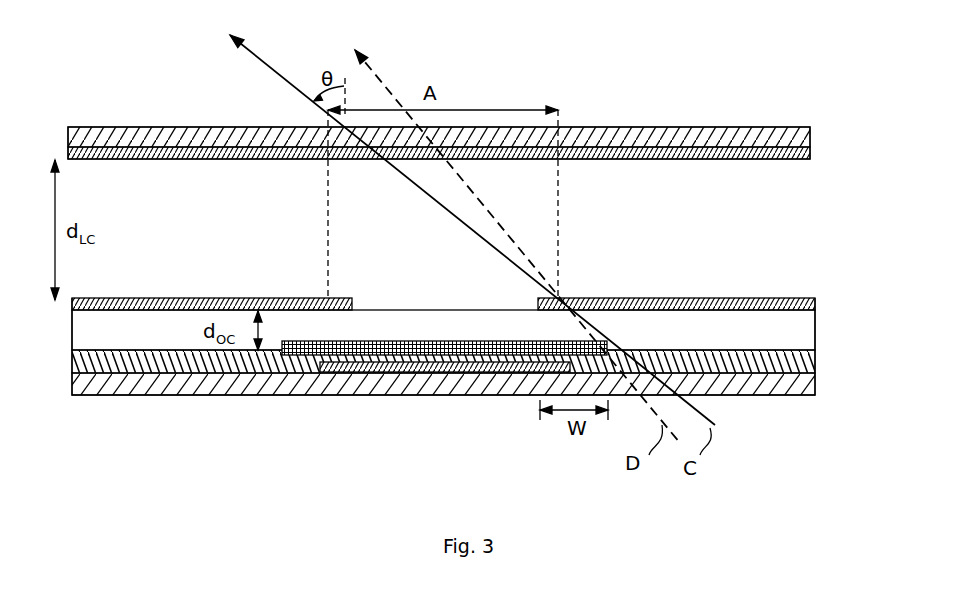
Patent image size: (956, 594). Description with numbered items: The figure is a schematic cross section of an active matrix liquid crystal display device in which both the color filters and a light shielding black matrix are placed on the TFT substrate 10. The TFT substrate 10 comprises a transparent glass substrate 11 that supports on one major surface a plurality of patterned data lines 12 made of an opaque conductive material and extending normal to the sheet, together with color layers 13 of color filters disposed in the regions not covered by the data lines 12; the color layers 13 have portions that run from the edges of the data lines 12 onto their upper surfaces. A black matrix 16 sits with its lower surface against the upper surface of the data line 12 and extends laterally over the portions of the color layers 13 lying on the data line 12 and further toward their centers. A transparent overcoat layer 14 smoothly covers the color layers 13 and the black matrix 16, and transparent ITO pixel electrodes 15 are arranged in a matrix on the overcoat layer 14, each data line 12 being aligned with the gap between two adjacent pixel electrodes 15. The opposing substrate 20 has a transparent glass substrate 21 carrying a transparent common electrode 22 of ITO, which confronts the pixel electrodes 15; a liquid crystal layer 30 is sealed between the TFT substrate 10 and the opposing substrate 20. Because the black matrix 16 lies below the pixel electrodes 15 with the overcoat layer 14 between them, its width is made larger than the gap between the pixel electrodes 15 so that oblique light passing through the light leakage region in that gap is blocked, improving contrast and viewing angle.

The TFT substrate 10 is at (70, 402).
The transparent glass substrate 11 is at (115, 390).
The data lines 12 is at (470, 372).
The color layers 13 is at (283, 375).
The overcoat layer 14 is at (610, 320).
The pixel electrodes 15 is at (105, 303).
The black matrix 16 is at (365, 352).
The opposing substrate 20 is at (70, 122).
The transparent glass substrate 21 is at (615, 128).
The common electrode 22 is at (675, 150).
The liquid crystal layer 30 is at (211, 234).